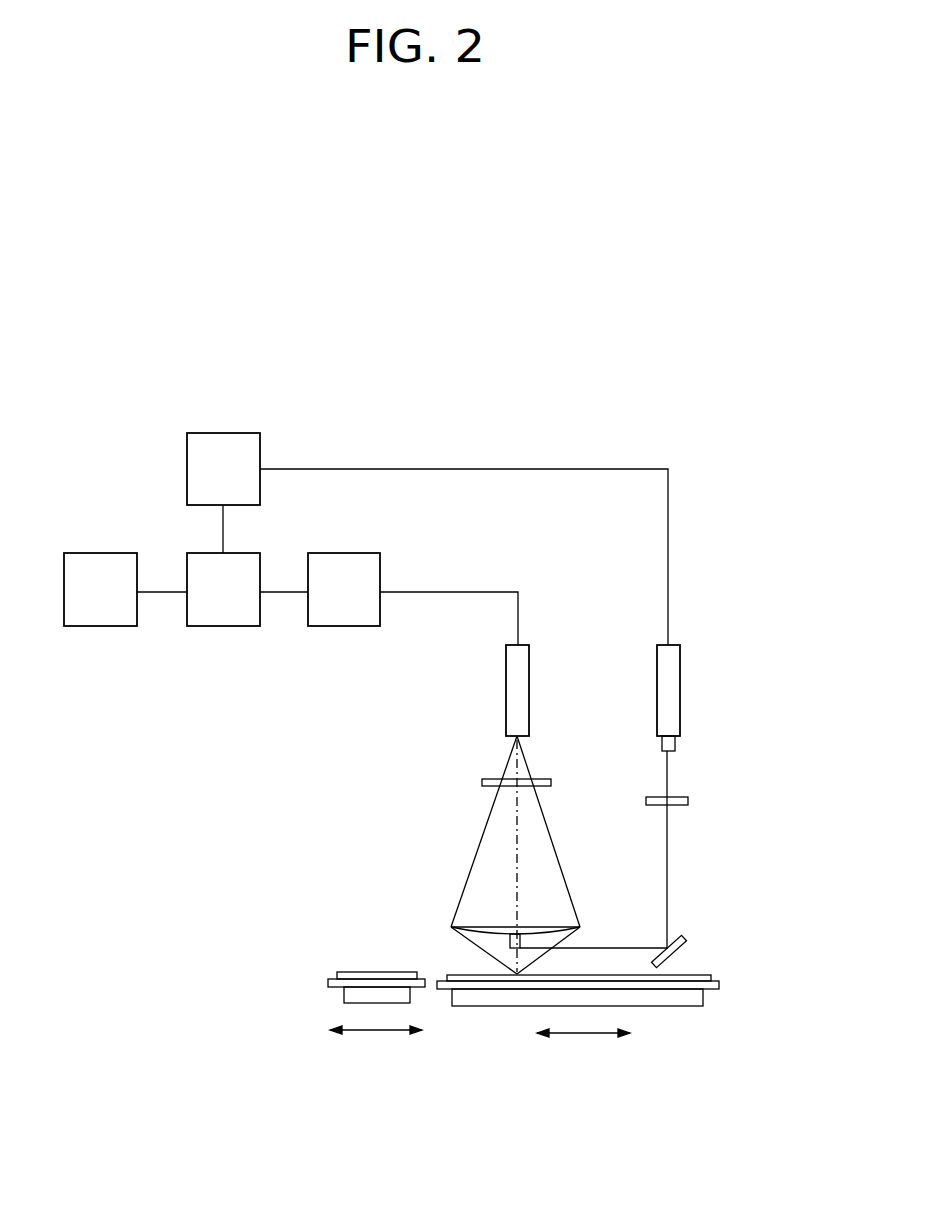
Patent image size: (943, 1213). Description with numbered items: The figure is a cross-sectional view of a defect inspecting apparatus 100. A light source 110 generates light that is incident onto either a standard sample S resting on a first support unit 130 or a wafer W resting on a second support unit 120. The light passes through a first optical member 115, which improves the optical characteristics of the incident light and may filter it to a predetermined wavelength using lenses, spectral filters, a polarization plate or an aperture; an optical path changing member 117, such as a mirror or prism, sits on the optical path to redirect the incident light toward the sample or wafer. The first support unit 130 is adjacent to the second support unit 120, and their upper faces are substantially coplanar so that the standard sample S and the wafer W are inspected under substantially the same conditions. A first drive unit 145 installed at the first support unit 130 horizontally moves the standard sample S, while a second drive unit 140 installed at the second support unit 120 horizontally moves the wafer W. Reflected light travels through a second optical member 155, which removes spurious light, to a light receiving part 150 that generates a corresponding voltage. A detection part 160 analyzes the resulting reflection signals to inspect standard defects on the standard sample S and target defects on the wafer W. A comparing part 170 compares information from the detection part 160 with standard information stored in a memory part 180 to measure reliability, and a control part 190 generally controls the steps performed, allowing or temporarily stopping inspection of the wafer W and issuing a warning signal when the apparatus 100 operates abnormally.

The defect inspecting apparatus 100 is at (431, 337).
The light source 110 is at (680, 690).
The first optical member 115 is at (690, 801).
The optical path changing member 117 is at (686, 938).
The second support unit 120 is at (719, 985).
The first support unit 130 is at (328, 982).
The second drive unit 140 is at (703, 995).
The first drive unit 145 is at (344, 995).
The light receiving part 150 is at (529, 690).
The second optical member 155 is at (482, 783).
The detection part 160 is at (343, 626).
The comparing part 170 is at (223, 626).
The memory part 180 is at (100, 626).
The control part 190 is at (187, 466).
The wafer W is at (711, 978).
The standard sample S is at (376, 972).